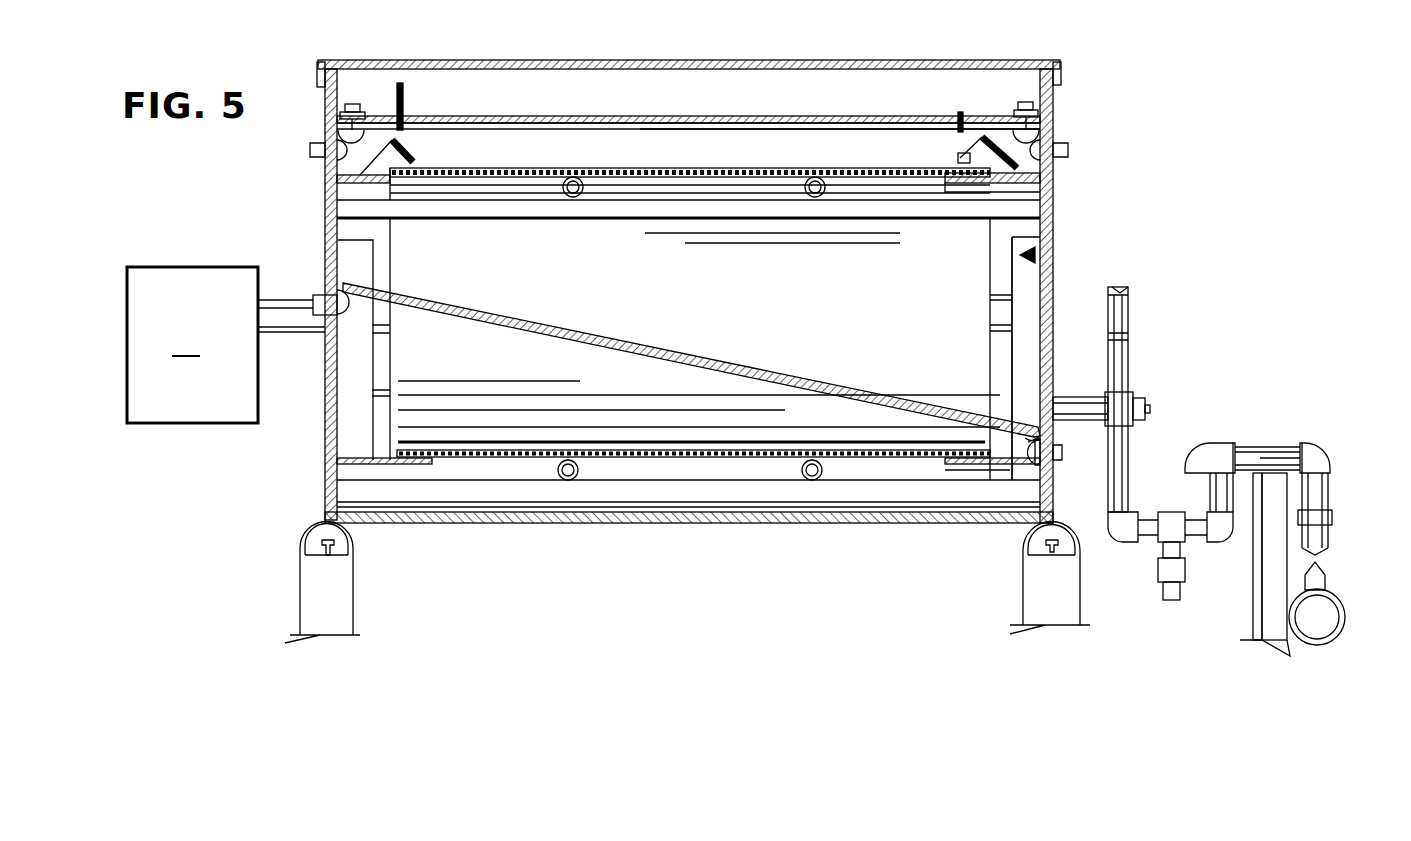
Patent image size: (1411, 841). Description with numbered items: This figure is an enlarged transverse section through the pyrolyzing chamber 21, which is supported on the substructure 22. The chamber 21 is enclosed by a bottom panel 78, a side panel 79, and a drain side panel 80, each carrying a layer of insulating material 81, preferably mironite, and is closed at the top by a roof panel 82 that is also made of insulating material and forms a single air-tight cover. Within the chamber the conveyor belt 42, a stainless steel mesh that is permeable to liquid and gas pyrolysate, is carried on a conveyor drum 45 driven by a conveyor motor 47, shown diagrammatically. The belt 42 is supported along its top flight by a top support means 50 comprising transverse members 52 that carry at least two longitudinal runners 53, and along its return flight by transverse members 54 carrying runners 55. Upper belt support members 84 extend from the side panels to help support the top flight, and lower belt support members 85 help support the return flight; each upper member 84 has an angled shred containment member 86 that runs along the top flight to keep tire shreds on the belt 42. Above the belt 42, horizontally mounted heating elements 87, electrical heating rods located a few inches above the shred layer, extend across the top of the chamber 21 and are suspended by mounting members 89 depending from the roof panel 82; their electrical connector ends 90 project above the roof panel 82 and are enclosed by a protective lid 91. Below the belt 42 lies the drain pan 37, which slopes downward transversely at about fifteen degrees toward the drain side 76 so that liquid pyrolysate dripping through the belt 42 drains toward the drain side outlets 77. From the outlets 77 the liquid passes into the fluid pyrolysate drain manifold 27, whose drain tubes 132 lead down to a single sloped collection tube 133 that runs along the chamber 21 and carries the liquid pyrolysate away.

The pyrolyzing chamber 21 is at (690, 590).
The substructure 22 is at (1047, 597).
The fluid pyrolysate drain manifold 27 is at (1258, 398).
The drain pan 37 is at (633, 342).
The conveyor belt 42 is at (693, 168).
The conveyor drum 45 is at (390, 395).
The conveyor motor 47 is at (232, 345).
The top support means 50 is at (731, 229).
The transverse members 52 is at (587, 208).
The longitudinal runners 53 is at (813, 196).
The transverse members 54 is at (835, 492).
The runners 55 is at (563, 480).
The drain side 76 is at (1020, 385).
The drain side outlets 77 is at (1050, 408).
The bottom panel 78 is at (985, 528).
The side panel 79 is at (325, 236).
The drain side panel 80 is at (1055, 222).
The layer of insulating material 81 is at (1055, 253).
The roof panel 82 is at (760, 116).
The upper belt support members 84 is at (337, 184).
The lower belt support members 85 is at (345, 465).
The angled shred containment member 86 is at (410, 150).
The heating elements 87 is at (703, 130).
The mounting members 89 is at (960, 112).
The electrical connector ends 90 is at (403, 100).
The protective lid 91 is at (810, 60).
The drain tubes 132 is at (1228, 595).
The collection tube 133 is at (1320, 617).